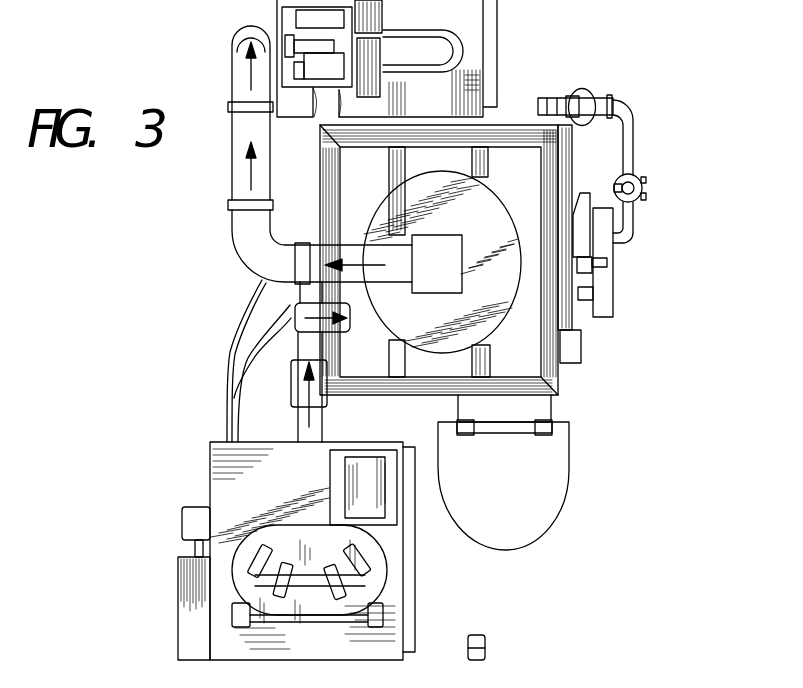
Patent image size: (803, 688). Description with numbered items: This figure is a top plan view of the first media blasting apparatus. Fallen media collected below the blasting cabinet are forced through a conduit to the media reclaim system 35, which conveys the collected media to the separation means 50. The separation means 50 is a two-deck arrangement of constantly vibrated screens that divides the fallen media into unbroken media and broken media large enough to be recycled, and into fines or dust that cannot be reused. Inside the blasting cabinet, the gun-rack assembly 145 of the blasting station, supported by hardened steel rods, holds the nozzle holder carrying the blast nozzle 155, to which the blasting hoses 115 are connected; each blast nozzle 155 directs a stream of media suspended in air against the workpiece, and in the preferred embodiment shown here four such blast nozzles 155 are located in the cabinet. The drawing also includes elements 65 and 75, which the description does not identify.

The return air duct 65 is at (224, 40).
The control valve unit 75 is at (387, 82).
The blasting hoses 115 is at (214, 354).
The media reclaim system 35 is at (530, 242).
The separation means 50 is at (530, 339).
The gun-rack assembly 145 is at (390, 583).
The blast nozzle 155 is at (242, 571).